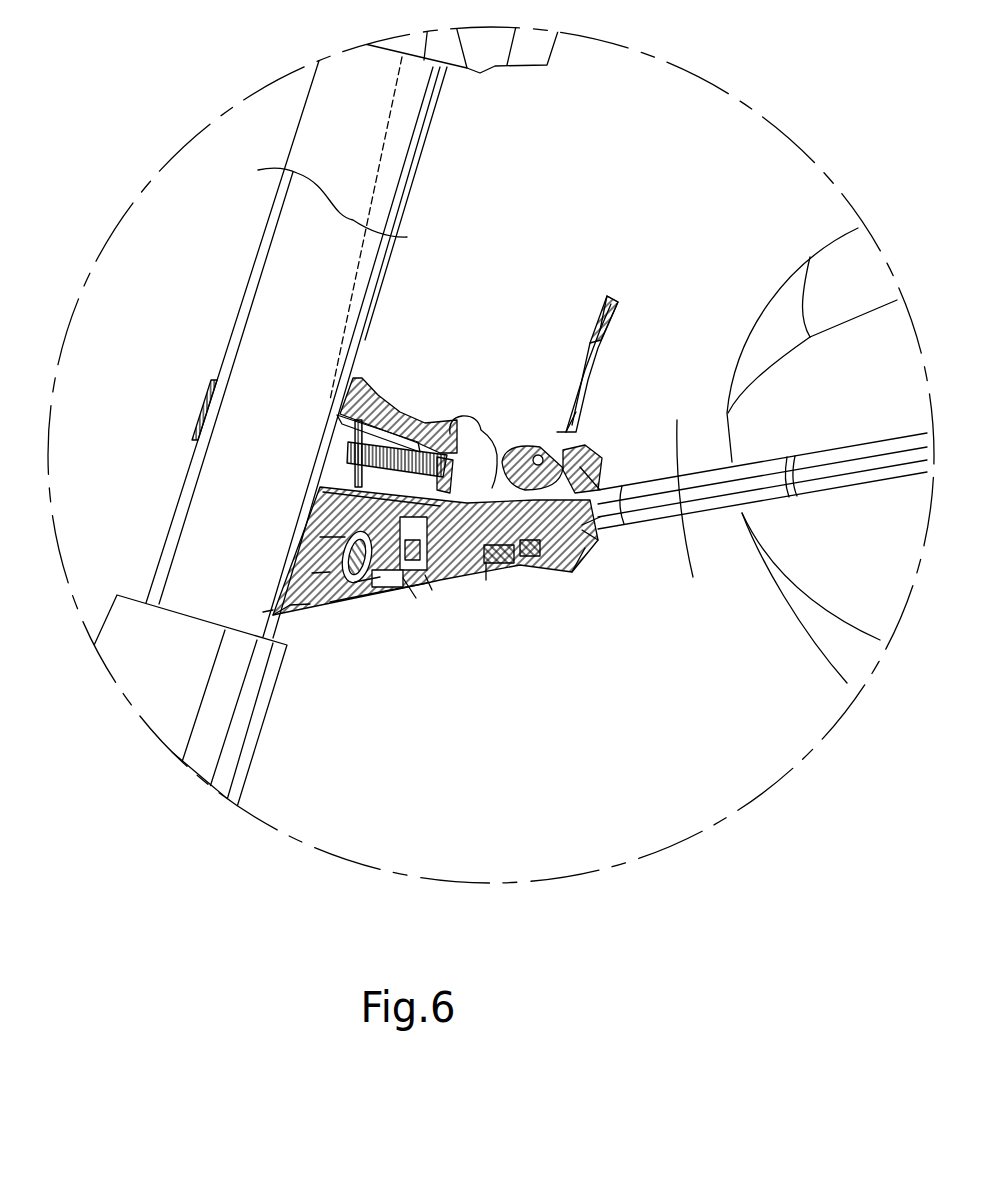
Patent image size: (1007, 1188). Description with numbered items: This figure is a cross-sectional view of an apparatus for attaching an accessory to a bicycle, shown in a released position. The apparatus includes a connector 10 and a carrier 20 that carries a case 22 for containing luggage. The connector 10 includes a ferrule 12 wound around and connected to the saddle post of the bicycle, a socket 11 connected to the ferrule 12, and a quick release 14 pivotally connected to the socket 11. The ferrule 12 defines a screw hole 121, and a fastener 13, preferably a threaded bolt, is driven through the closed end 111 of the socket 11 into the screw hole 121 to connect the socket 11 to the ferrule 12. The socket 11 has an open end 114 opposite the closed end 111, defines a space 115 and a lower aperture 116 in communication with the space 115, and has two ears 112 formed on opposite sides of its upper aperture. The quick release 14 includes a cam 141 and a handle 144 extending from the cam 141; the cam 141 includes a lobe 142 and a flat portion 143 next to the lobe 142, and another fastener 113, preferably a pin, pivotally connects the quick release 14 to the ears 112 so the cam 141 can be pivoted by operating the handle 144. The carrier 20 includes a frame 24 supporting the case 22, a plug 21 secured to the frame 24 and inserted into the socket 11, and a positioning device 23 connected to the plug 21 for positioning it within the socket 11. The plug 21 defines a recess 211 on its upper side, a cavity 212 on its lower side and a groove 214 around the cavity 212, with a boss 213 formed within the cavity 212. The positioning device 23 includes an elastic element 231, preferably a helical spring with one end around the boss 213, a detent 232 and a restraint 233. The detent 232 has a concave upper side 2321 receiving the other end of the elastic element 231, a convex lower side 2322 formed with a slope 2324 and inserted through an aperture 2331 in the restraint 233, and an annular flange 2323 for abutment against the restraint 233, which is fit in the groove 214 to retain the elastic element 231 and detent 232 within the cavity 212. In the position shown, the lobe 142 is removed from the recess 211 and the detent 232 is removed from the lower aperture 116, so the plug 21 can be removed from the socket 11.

The connector 10 is at (410, 752).
The socket 11 is at (310, 606).
The ferrule 12 is at (207, 400).
The fastener 13 is at (343, 436).
The quick release 14 is at (587, 363).
The carrier 20 is at (697, 767).
The plug 21 is at (330, 608).
The case 22 is at (820, 643).
The positioning device 23 is at (550, 667).
The frame 24 is at (723, 512).
The closed end 111 is at (340, 470).
The ears 112 is at (438, 440).
The fastener 113 is at (533, 450).
The open end 114 is at (592, 480).
The space 115 is at (345, 492).
The lower aperture 116 is at (430, 590).
The screw hole 121 is at (352, 478).
The cam 141 is at (575, 412).
The lobe 142 is at (483, 430).
The flat portion 143 is at (566, 432).
The handle 144 is at (593, 327).
The recess 211 is at (580, 467).
The cavity 212 is at (582, 525).
The boss 213 is at (582, 532).
The groove 214 is at (312, 573).
The elastic element 231 is at (583, 548).
The detent 232 is at (488, 563).
The restraint 233 is at (380, 577).
The concave upper side 2321 is at (528, 548).
The convex lower side 2322 is at (486, 580).
The annular flange 2323 is at (320, 537).
The slope 2324 is at (440, 585).
The aperture 2331 is at (416, 598).